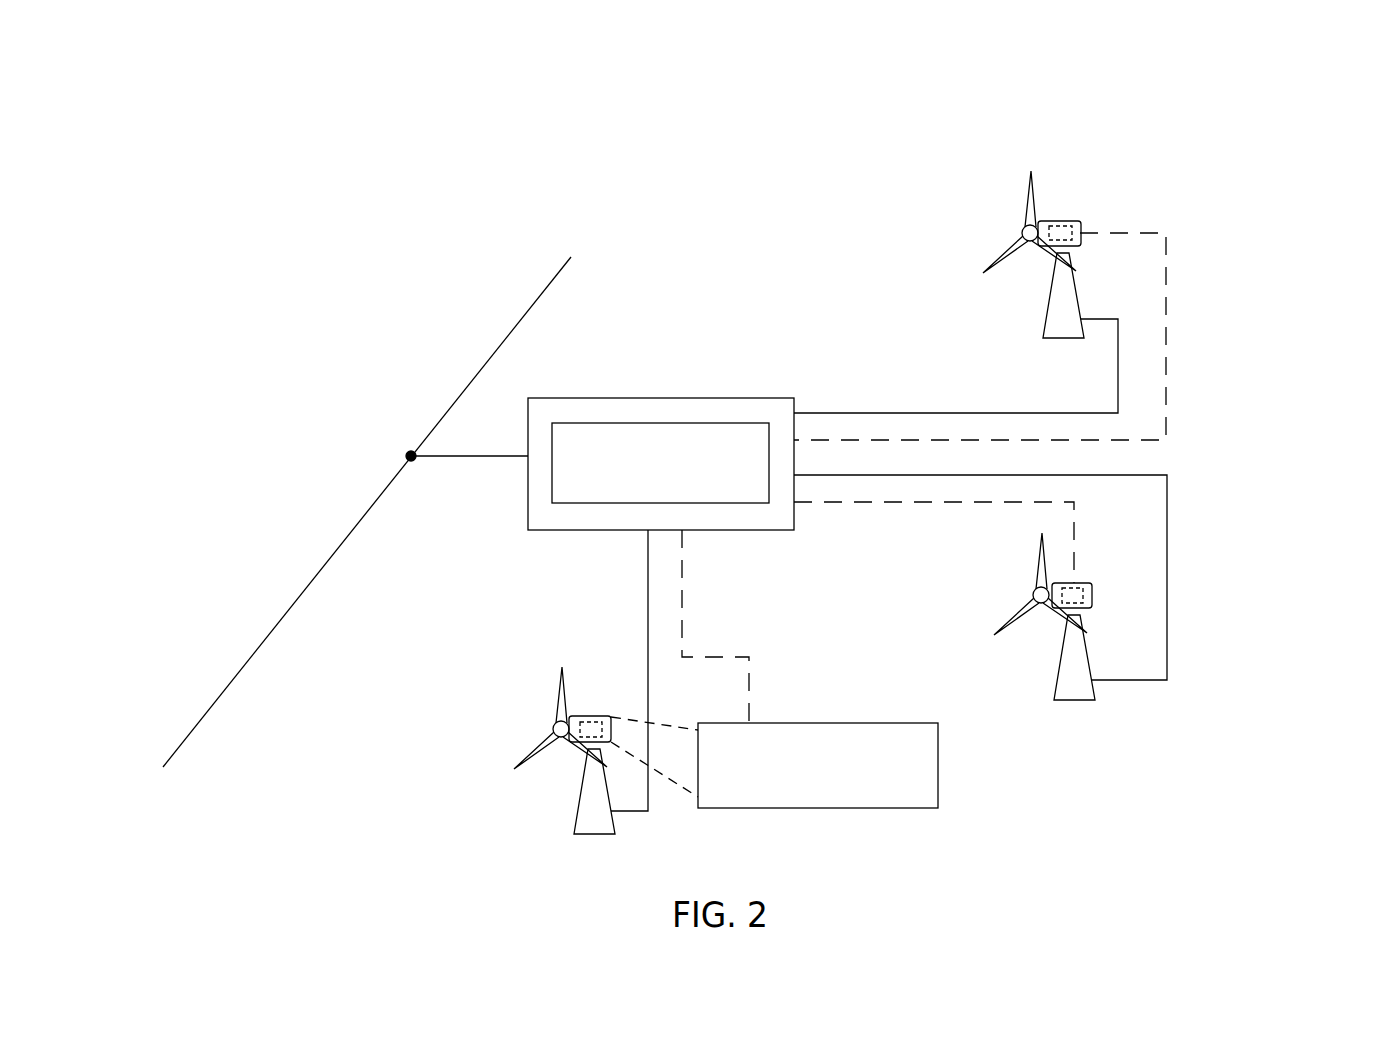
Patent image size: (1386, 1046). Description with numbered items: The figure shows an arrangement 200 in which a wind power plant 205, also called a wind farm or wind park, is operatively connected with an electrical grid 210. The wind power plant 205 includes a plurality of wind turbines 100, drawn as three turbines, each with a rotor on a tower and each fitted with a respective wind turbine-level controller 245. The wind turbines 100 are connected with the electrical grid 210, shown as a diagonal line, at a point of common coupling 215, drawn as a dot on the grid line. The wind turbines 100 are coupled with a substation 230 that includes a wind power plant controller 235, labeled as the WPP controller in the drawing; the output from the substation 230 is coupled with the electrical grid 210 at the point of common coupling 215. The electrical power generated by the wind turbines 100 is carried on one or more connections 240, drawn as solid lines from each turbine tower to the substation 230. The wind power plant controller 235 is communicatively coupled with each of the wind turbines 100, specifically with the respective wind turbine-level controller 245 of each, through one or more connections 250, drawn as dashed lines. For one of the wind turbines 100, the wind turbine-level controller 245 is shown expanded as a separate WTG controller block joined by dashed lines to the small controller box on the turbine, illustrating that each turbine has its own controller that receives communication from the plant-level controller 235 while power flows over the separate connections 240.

The wind turbine 100 is at (1005, 218).
The arrangement 200 is at (1256, 118).
The wind power plant 205 is at (1182, 208).
The electrical grid 210 is at (196, 729).
The point of common coupling 215 is at (405, 455).
The substation 230 is at (693, 397).
The wind power plant controller 235 is at (680, 490).
The connections 240 is at (946, 412).
The wind turbine-level controller 245 is at (1074, 222).
The connections 250 is at (1166, 318).